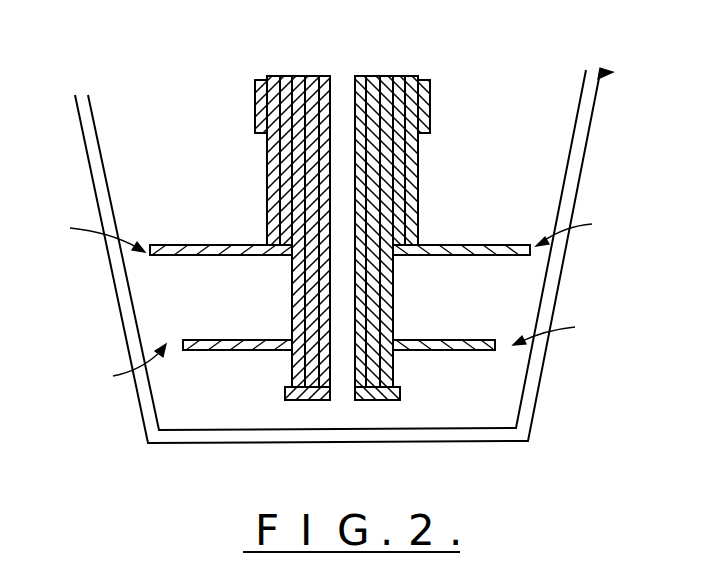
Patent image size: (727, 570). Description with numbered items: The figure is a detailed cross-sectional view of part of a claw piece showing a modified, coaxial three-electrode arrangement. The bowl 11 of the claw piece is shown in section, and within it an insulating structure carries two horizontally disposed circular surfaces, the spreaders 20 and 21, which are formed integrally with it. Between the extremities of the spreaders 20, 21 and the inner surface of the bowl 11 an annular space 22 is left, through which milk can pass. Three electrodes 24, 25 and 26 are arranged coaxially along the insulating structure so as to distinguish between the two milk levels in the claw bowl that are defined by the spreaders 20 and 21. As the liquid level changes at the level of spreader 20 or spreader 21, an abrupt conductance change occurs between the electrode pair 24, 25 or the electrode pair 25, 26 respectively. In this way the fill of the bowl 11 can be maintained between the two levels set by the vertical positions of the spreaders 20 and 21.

The bowl 11 is at (547, 175).
The spreader 20 is at (150, 256).
The spreader 21 is at (216, 352).
The annular space 22 is at (335, 303).
The electrode 24 is at (277, 156).
The electrode 25 is at (298, 278).
The electrode 26 is at (300, 400).